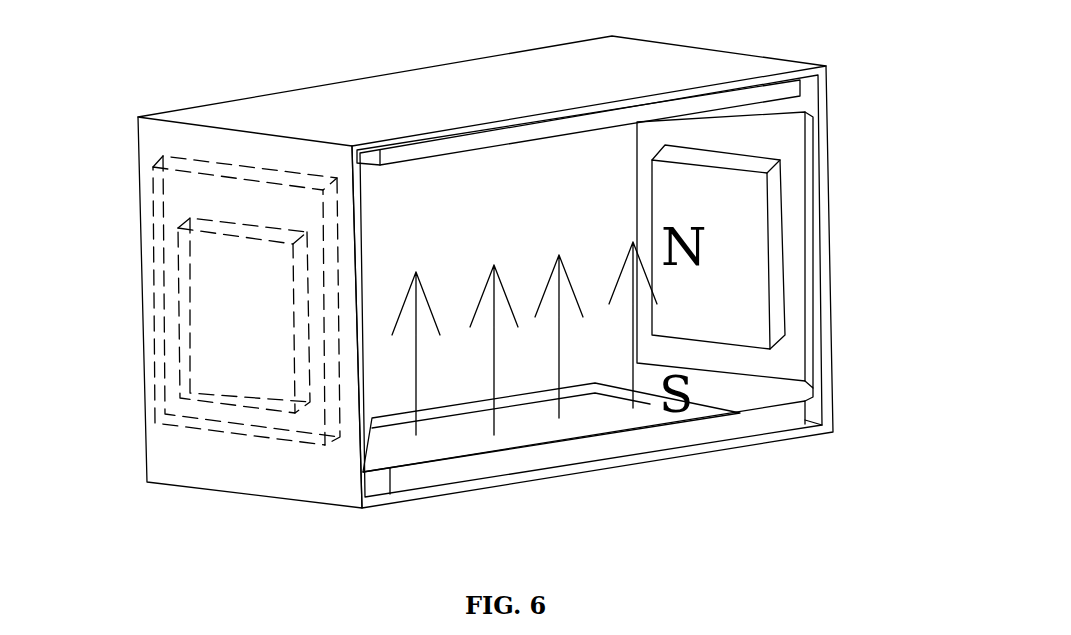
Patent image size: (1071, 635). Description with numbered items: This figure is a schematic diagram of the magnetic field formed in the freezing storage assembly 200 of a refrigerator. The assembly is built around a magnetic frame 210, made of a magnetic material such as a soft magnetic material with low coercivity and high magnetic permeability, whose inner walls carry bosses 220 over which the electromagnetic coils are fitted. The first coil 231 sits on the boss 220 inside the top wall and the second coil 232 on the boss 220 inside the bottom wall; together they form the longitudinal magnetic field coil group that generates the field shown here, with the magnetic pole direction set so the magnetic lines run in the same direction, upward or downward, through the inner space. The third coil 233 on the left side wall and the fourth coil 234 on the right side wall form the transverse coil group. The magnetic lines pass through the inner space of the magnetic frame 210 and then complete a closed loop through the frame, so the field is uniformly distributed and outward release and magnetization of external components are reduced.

The freezing storage assembly 200 is at (215, 64).
The magnetic frame 210 is at (830, 93).
The boss 220 is at (748, 233).
The first coil 231 is at (635, 113).
The second coil 232 is at (750, 428).
The third coil 233 is at (293, 422).
The fourth coil 234 is at (793, 290).